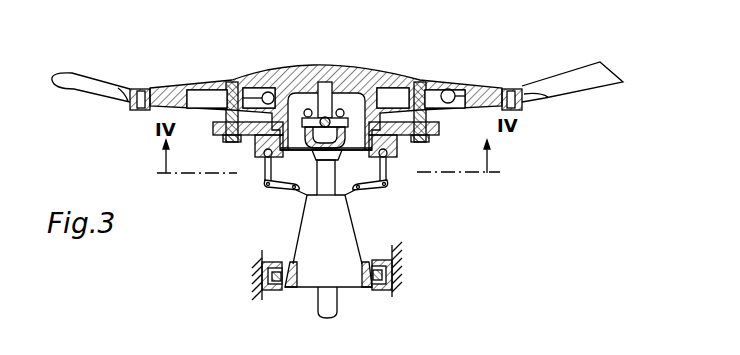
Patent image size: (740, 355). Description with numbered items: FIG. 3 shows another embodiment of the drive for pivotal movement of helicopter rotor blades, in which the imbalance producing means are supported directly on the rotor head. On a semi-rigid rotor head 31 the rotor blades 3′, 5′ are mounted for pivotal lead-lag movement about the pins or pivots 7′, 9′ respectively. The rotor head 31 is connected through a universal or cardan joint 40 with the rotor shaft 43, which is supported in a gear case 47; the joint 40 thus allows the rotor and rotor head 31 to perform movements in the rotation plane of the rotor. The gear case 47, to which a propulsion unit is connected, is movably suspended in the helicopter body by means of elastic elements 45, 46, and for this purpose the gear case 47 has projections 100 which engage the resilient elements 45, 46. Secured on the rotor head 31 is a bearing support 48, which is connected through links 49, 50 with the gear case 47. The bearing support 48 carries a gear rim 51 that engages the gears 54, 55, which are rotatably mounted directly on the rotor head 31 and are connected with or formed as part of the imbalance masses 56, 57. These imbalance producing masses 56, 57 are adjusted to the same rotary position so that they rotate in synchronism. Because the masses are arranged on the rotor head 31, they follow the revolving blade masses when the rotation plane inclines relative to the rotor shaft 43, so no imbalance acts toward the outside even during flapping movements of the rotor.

The rotor blade 3′ is at (600, 65).
The rotor blade 5′ is at (73, 77).
The pin or pivot 7′ is at (503, 85).
The pin or pivot 9′ is at (147, 92).
The semi-rigid rotor head 31 is at (308, 82).
The universal or cardan joint 40 is at (337, 118).
The rotor shaft 43 is at (328, 172).
The elastic element 45 is at (270, 272).
The elastic element 46 is at (392, 290).
The gear case 47 is at (290, 290).
The bearing support 48 is at (263, 160).
The link 49 is at (267, 190).
The link 50 is at (373, 188).
The gear rim 51 is at (395, 135).
The gear 54 is at (225, 102).
The gear 55 is at (440, 135).
The imbalance mass 56 is at (275, 92).
The imbalance mass 57 is at (447, 92).
The projection 100 is at (377, 273).